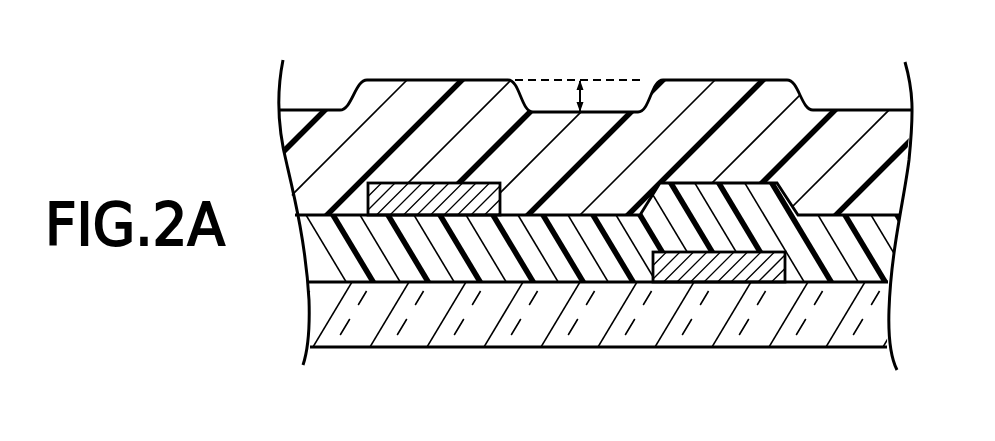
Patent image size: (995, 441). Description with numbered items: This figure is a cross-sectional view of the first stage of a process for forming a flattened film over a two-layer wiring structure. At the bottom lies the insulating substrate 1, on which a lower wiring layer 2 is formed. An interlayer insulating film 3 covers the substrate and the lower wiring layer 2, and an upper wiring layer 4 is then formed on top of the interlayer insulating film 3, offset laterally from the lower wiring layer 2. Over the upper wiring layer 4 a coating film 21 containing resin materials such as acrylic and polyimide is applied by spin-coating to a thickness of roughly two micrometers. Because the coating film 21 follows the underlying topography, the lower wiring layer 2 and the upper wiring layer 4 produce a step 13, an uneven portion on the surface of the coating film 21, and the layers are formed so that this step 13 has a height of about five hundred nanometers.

The insulating substrate 1 is at (440, 330).
The lower wiring layer 2 is at (738, 277).
The interlayer insulating film 3 is at (575, 268).
The upper wiring layer 4 is at (461, 183).
The step 13 is at (581, 102).
The coating film 21 is at (385, 90).